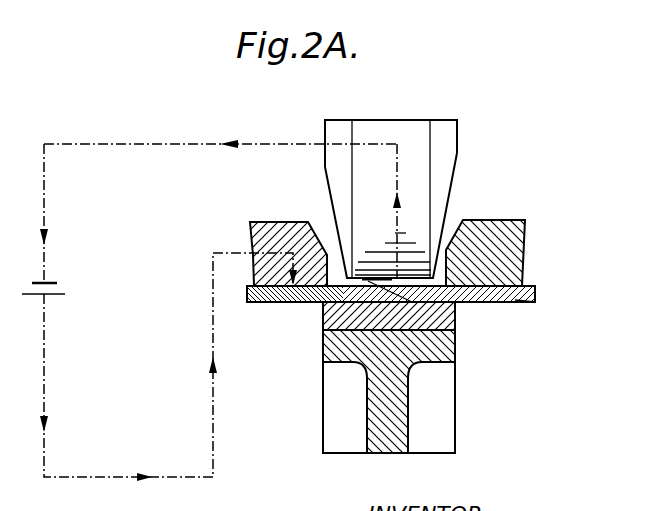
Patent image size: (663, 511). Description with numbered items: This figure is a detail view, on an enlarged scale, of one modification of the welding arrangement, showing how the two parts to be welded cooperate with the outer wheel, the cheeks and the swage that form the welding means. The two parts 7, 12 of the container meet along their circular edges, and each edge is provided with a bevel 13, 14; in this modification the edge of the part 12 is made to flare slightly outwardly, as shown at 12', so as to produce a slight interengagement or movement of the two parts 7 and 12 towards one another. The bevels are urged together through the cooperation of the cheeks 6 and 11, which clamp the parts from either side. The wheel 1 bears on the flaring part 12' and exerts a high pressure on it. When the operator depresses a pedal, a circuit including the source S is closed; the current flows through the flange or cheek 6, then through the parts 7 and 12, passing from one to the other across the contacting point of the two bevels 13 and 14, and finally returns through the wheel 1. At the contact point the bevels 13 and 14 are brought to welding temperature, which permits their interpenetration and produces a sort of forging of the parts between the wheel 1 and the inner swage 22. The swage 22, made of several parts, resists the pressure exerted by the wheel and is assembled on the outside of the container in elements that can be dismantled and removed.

The wheel 1 is at (440, 138).
The cheek 6 is at (276, 228).
The container part 7 is at (265, 303).
The cheek 11 is at (498, 228).
The container part 12 is at (550, 318).
The flaring edge portion 12' is at (439, 307).
The bevel 13 is at (390, 279).
The bevel 14 is at (453, 332).
The inner swage 22 is at (428, 413).
The source S is at (60, 293).